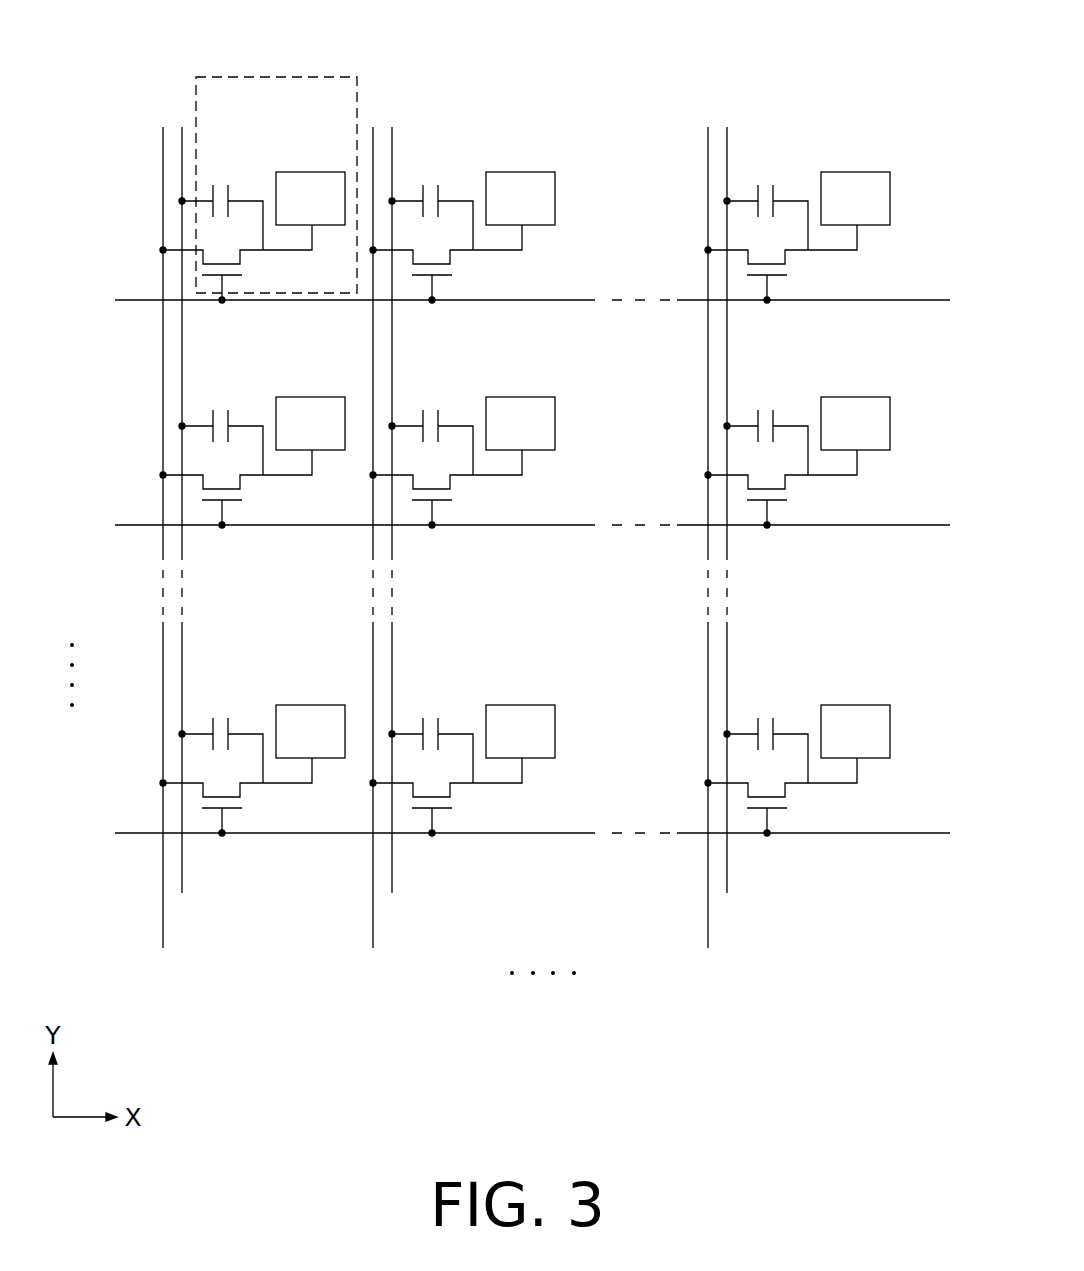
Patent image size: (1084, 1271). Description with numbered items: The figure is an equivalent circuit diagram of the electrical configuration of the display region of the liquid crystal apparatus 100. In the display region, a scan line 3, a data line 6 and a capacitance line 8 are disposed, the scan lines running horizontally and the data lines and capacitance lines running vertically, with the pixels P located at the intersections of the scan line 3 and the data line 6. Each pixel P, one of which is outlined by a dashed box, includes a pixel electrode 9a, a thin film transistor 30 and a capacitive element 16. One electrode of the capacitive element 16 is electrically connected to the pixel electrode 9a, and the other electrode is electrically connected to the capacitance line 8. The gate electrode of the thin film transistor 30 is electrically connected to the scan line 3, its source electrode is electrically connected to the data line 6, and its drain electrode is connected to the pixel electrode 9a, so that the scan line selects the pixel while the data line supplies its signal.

The scan line 3 is at (935, 298).
The data line 6 is at (163, 910).
The capacitance line 8 is at (182, 870).
The pixel electrode 9a is at (310, 183).
The capacitive element 16 is at (224, 164).
The thin film transistor (TFT) 30 is at (258, 272).
The pixel P is at (280, 76).
The liquid crystal apparatus 100 is at (692, 84).